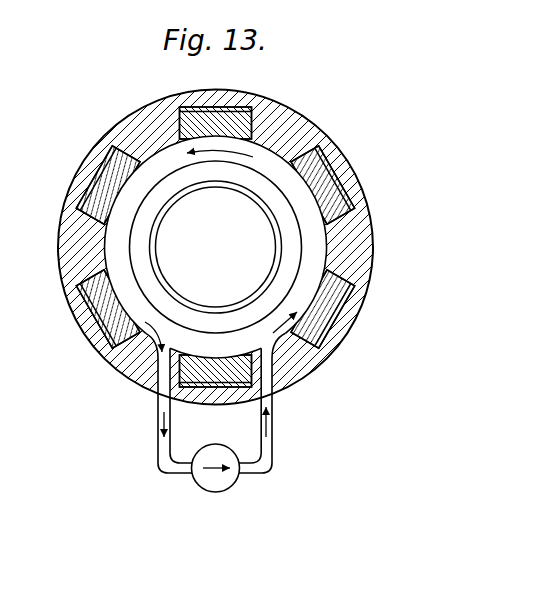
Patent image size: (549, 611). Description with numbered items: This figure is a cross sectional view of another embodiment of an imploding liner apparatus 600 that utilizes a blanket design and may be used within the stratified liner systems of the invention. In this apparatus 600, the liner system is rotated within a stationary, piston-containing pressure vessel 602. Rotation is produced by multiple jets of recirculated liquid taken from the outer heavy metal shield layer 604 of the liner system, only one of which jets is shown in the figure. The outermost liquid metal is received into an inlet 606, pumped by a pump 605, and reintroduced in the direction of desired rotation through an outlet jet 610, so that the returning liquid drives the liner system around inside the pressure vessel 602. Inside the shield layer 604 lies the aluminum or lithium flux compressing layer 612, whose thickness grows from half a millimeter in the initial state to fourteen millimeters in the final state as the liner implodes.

The imploding liner apparatus 600 is at (62, 190).
The pressure vessel 602 is at (118, 360).
The outer heavy metal shield layer 604 is at (160, 152).
The auxiliary pump 605 is at (227, 489).
The inlet 606 is at (160, 452).
The outlet jet 610 is at (273, 348).
The flux compressing layer 612 is at (245, 190).